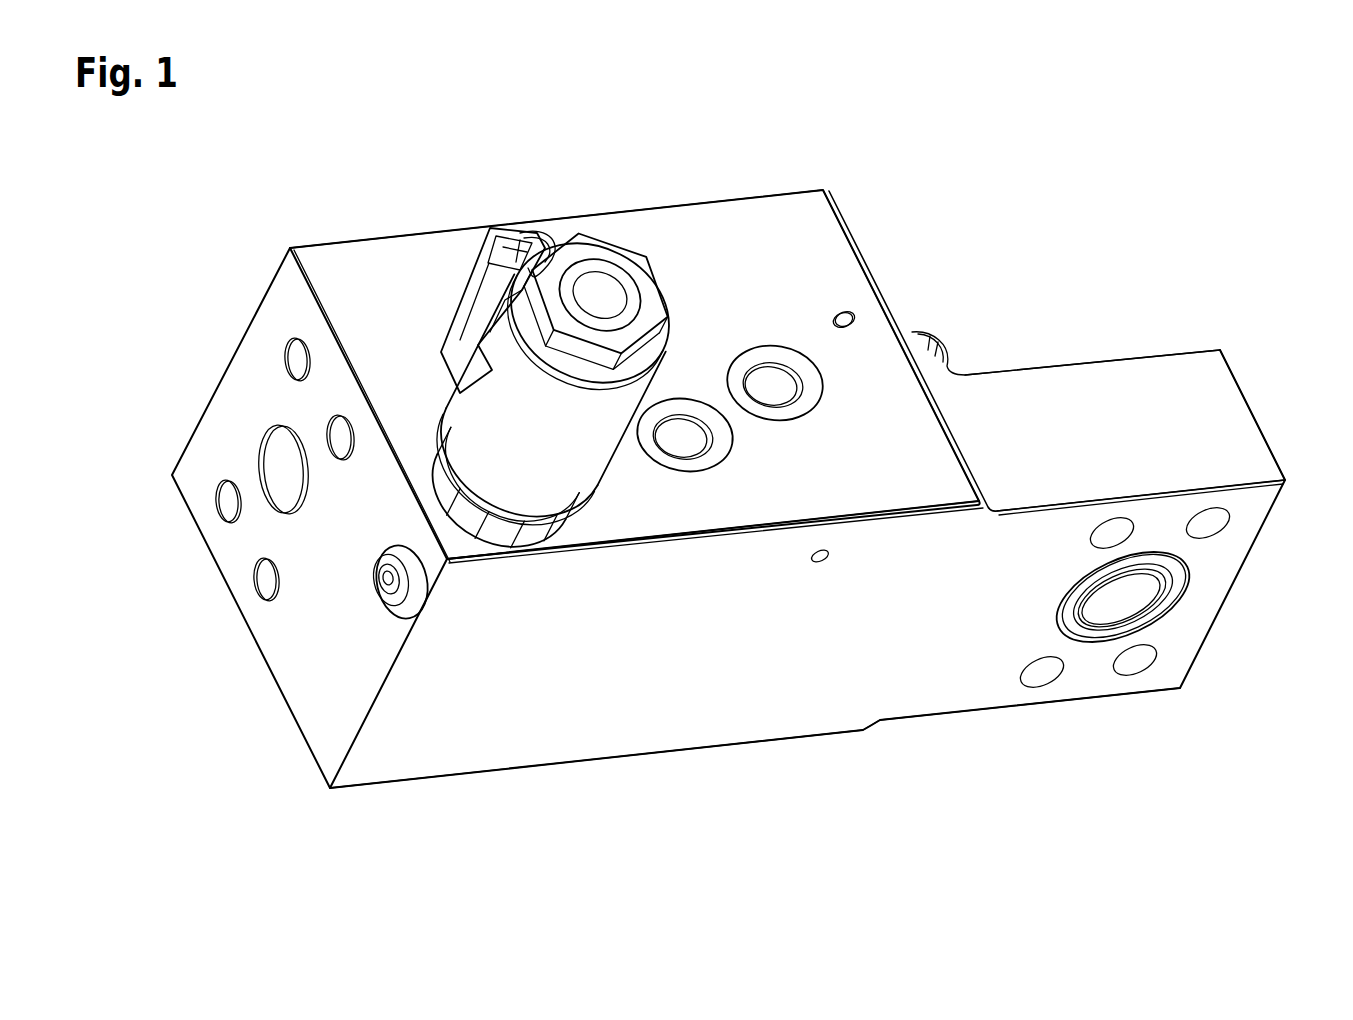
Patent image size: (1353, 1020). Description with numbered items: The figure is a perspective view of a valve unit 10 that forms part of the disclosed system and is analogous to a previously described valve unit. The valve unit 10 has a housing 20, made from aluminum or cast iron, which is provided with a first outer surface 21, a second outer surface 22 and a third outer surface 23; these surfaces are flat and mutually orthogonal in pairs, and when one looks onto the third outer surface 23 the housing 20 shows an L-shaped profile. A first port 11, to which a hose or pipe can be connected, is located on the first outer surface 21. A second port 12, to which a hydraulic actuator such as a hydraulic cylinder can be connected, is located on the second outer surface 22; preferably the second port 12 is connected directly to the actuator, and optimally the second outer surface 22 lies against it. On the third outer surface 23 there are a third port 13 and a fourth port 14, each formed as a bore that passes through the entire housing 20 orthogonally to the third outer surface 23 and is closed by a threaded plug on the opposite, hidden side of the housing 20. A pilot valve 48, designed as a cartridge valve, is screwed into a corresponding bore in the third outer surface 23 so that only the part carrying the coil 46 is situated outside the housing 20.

The valve unit 10 is at (1034, 235).
The first port 11 is at (290, 462).
The second port 12 is at (1140, 595).
The third port 13 is at (778, 387).
The fourth port 14 is at (681, 445).
The housing 20 is at (1233, 398).
The first outer surface 21 is at (302, 687).
The second outer surface 22 is at (807, 717).
The third outer surface 23 is at (756, 240).
The coil 46 is at (492, 346).
The pilot valve 48 is at (472, 423).